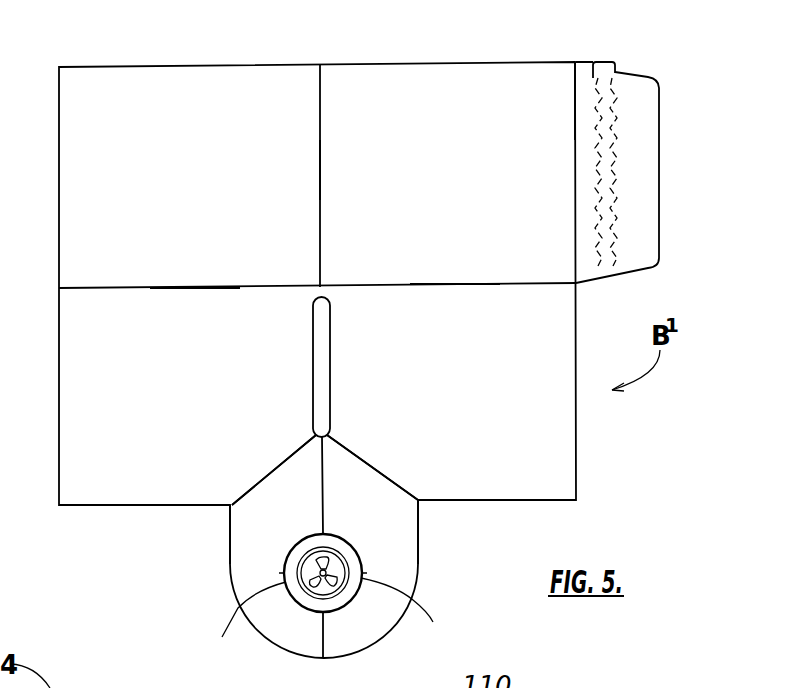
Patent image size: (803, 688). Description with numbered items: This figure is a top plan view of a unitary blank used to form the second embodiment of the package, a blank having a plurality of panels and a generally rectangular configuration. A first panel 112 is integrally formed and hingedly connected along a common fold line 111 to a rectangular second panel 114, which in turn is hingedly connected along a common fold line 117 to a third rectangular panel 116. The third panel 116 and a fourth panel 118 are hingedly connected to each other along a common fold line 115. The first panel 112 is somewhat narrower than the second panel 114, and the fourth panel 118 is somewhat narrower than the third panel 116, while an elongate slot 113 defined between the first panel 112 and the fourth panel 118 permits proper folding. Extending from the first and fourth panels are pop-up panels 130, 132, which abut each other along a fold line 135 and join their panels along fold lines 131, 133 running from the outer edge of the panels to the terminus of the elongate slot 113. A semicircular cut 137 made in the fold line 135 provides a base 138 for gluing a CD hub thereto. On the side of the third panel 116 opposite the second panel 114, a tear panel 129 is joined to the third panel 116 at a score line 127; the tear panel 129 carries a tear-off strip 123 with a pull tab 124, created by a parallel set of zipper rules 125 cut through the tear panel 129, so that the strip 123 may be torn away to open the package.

The fold line 111 is at (193, 288).
The first panel 112 is at (185, 416).
The elongate slot 113 is at (322, 380).
The second panel 114 is at (183, 191).
The fold line 115 is at (453, 285).
The third panel 116 is at (478, 188).
The fold line 117 is at (320, 167).
The fourth panel 118 is at (480, 411).
The tear-off strip 123 is at (607, 165).
The pull tab 124 is at (603, 62).
The zipper rules 125 is at (617, 247).
The score line 127 is at (575, 62).
The tear panel 129 is at (637, 82).
The pop-up panel 130 is at (240, 530).
The fold line 131 is at (268, 470).
The pop-up panel 132 is at (403, 560).
The fold line 133 is at (373, 463).
The fold line 135 is at (323, 525).
The semicircular cut 137 is at (408, 618).
The base 138 is at (227, 625).